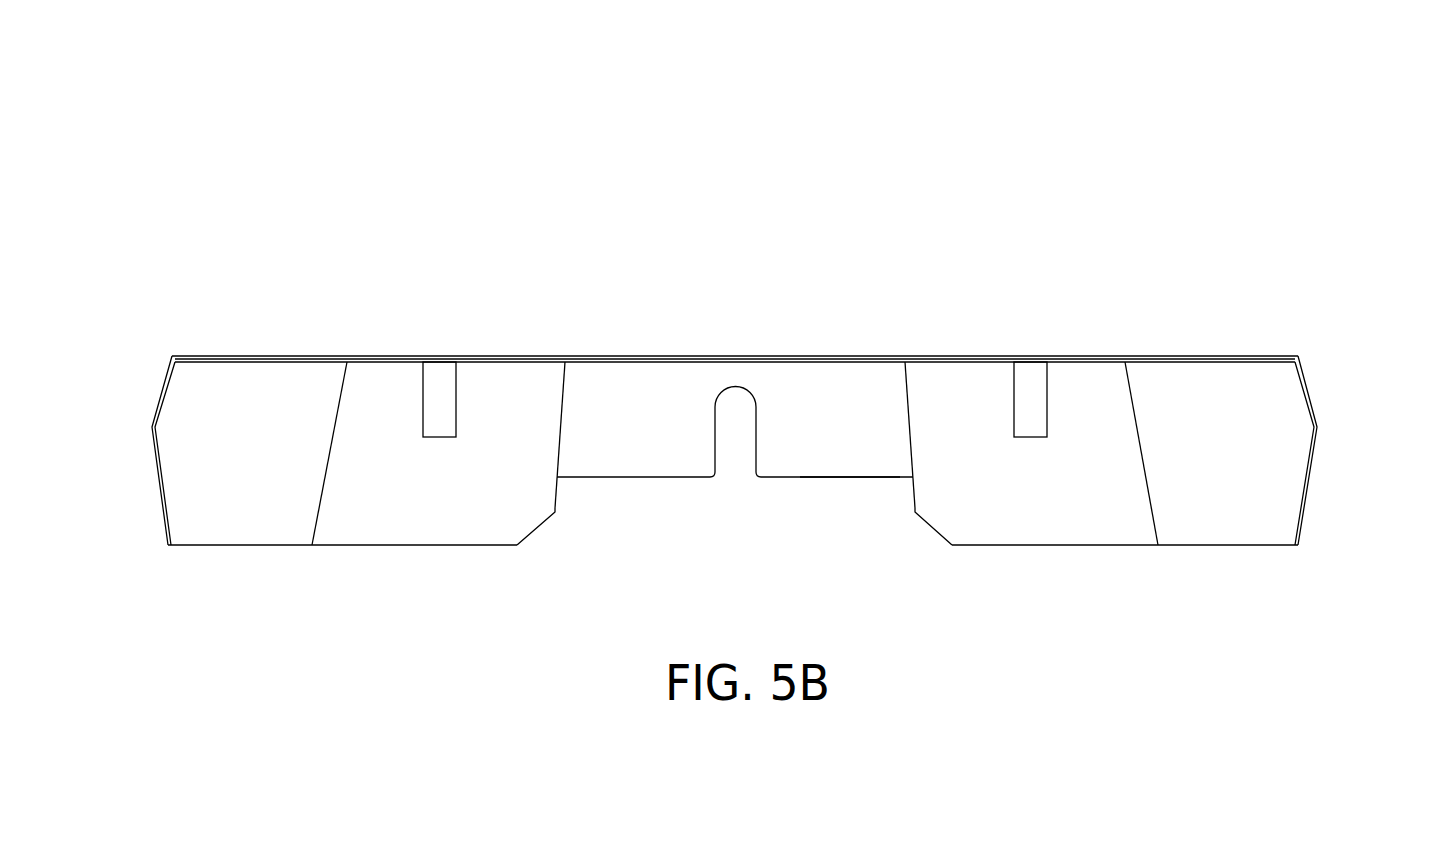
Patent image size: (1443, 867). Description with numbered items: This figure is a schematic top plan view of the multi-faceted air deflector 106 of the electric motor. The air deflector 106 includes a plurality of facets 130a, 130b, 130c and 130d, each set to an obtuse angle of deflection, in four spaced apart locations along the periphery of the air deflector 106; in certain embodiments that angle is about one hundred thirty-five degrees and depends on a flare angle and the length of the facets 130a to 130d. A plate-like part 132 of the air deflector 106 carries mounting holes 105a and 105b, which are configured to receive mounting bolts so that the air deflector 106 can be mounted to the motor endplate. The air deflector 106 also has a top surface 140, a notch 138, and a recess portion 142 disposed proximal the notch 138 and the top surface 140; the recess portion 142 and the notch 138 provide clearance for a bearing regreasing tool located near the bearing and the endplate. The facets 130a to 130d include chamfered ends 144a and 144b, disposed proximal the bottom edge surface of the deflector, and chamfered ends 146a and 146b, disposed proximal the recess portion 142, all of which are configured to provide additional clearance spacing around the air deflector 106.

The multi-faceted air deflector 106 is at (335, 162).
The plate-like part 132 is at (1182, 357).
The chamfered end 144a is at (1310, 495).
The chamfered end 144b is at (160, 503).
The facet 130a is at (1272, 408).
The facet 130b is at (1068, 513).
The facet 130c is at (382, 392).
The facet 130d is at (233, 395).
The mounting hole 105a is at (1015, 420).
The mounting hole 105b is at (456, 422).
The chamfered end 146a is at (932, 525).
The chamfered end 146b is at (542, 525).
The top surface 140 is at (836, 408).
The notch 138 is at (756, 427).
The recess portion 142 is at (825, 493).